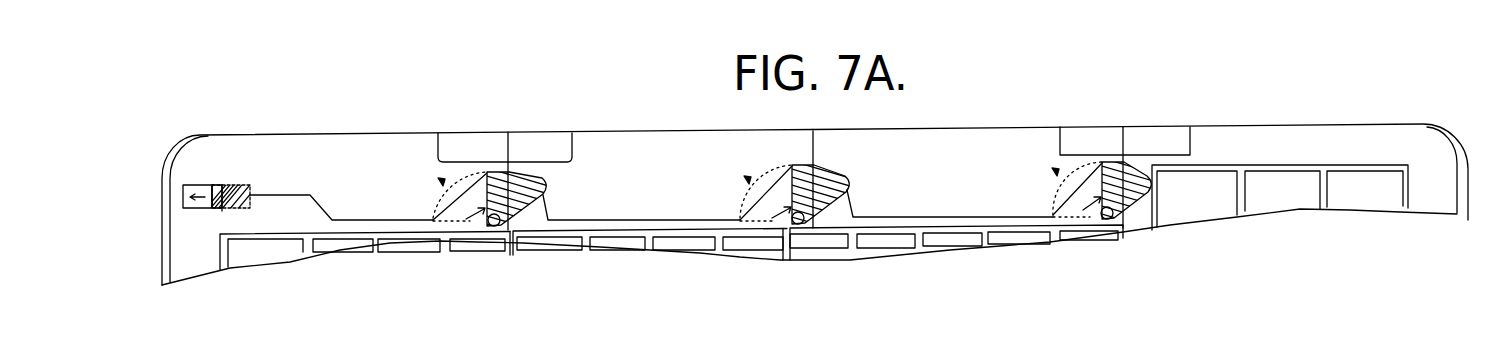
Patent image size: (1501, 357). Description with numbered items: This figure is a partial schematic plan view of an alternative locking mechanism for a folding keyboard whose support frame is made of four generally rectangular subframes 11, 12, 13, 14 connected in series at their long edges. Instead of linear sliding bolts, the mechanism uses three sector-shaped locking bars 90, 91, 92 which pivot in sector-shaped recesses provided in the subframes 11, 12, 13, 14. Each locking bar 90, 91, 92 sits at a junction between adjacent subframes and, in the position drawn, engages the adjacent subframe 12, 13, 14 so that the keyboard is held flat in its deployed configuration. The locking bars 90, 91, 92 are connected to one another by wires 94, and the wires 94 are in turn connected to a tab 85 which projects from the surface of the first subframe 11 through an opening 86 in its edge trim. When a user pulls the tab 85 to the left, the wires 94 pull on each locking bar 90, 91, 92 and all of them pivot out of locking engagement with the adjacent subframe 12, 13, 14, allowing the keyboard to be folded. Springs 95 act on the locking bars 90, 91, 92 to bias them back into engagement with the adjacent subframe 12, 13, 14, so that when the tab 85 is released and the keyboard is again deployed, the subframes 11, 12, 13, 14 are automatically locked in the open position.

The first subframe 11 is at (293, 155).
The second subframe 12 is at (662, 148).
The third subframe 13 is at (940, 148).
The fourth subframe 14 is at (1300, 147).
The tab 85 is at (215, 185).
The opening 86 is at (200, 208).
The first locking bar 90 is at (510, 173).
The second locking bar 91 is at (840, 167).
The third locking bar 92 is at (1132, 182).
The wire 94 is at (368, 220).
The spring 95 is at (480, 230).